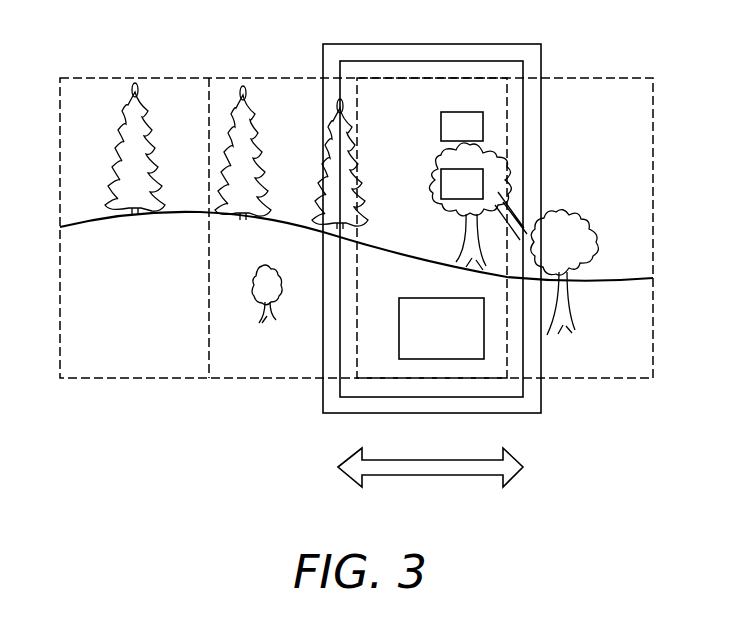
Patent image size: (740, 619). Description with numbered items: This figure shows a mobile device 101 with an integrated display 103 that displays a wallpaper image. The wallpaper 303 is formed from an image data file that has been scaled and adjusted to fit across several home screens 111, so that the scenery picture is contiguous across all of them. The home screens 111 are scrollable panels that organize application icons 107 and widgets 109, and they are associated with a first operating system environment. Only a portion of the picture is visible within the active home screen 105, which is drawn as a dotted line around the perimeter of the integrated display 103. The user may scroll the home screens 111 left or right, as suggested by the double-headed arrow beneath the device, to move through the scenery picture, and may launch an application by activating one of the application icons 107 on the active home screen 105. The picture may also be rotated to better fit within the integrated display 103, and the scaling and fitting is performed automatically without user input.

The mobile device 101 is at (523, 44).
The integrated display 103 is at (524, 107).
The active home screen 105 is at (390, 88).
The wallpaper 303 is at (448, 88).
The application icons 107 is at (441, 127).
The widget 109 is at (417, 297).
The home screens 111 is at (135, 78).